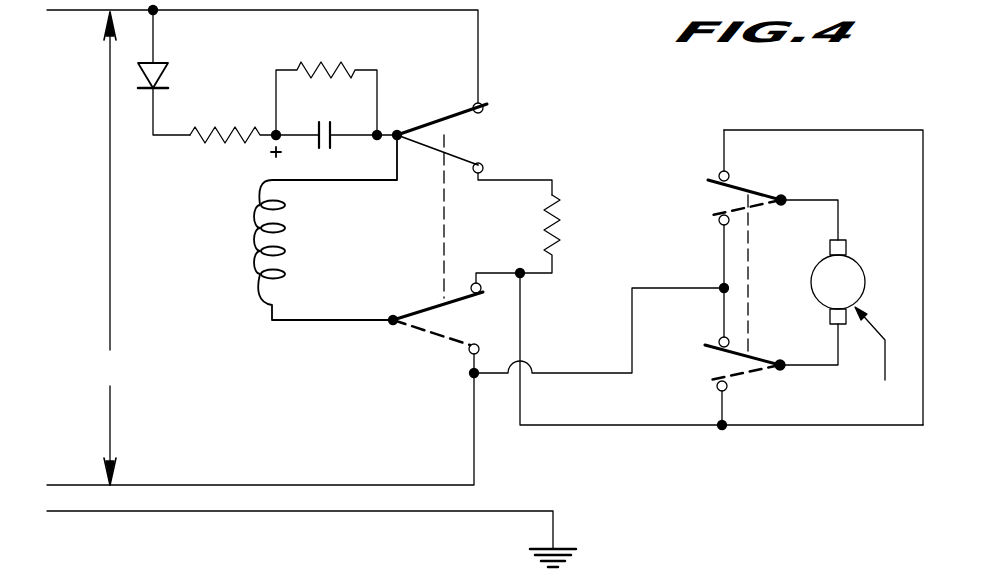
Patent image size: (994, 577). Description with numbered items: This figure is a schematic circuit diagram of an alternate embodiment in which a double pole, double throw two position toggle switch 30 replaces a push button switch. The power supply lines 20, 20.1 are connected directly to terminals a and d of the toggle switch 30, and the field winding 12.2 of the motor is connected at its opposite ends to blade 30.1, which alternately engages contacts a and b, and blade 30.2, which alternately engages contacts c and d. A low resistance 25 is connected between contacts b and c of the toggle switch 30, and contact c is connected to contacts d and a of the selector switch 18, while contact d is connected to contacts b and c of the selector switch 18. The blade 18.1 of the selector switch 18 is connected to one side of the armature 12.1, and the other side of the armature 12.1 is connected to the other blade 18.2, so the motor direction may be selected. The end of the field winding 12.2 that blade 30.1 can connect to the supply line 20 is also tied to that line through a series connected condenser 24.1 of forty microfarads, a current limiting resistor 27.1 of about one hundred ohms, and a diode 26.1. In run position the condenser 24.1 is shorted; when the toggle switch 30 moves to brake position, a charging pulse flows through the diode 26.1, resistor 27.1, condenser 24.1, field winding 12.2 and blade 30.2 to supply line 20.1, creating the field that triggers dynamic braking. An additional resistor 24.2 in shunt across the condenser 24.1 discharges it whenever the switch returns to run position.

The power supply line 20 is at (96, 12).
The power supply line 20.1 is at (158, 484).
The diode 26.1 is at (158, 86).
The current limiting resistor 27.1 is at (244, 97).
The additional resistor 24.2 is at (343, 70).
The condenser 24.1 is at (350, 115).
The toggle switch 30 is at (425, 130).
The blade 30.1 is at (438, 142).
The blade 30.2 is at (422, 312).
The low resistance 25 is at (555, 240).
The field winding 12.2 is at (254, 256).
The selector switch 18 is at (745, 180).
The blade 18.1 is at (760, 191).
The blade 18.2 is at (762, 370).
The armature 12.1 is at (868, 285).